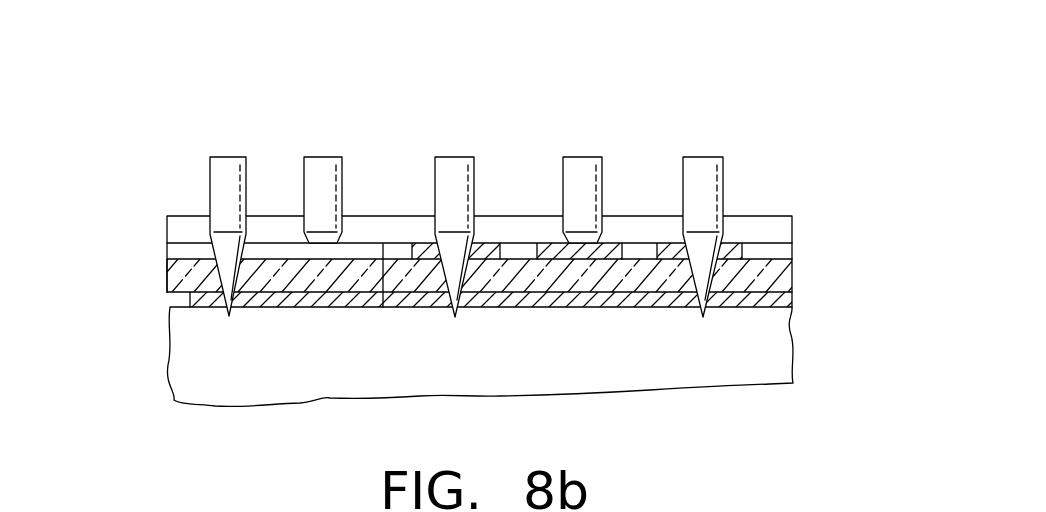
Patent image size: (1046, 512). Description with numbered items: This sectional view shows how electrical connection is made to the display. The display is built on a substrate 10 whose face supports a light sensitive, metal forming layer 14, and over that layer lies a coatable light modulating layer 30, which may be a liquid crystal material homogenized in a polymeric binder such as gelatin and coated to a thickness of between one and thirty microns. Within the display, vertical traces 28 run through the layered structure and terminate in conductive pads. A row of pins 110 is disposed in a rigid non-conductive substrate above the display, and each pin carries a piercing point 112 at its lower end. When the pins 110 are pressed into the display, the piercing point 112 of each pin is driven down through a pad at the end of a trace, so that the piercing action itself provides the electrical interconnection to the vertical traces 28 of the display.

The substrate 10 is at (753, 352).
The light sensitive, metal forming layer 14 is at (778, 303).
The vertical traces 28 is at (176, 252).
The light modulating layer 30 is at (808, 278).
The pins 110 is at (443, 170).
The piercing point 112 is at (225, 270).